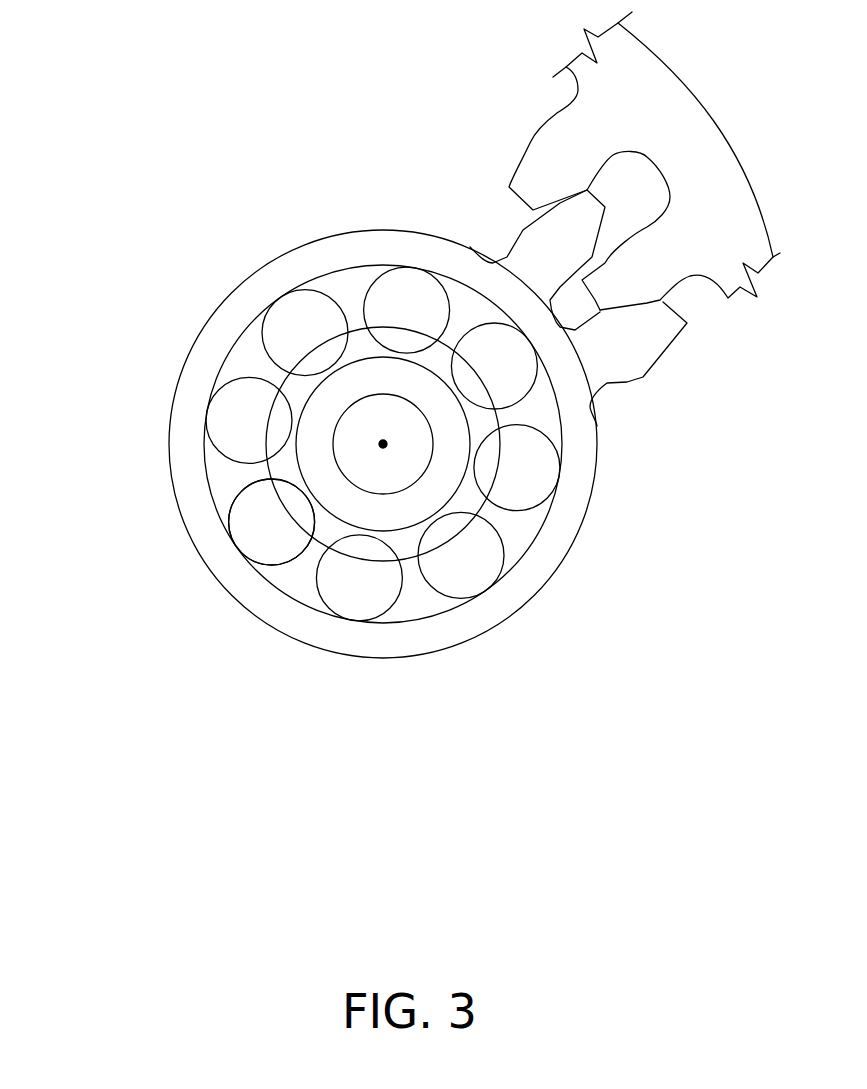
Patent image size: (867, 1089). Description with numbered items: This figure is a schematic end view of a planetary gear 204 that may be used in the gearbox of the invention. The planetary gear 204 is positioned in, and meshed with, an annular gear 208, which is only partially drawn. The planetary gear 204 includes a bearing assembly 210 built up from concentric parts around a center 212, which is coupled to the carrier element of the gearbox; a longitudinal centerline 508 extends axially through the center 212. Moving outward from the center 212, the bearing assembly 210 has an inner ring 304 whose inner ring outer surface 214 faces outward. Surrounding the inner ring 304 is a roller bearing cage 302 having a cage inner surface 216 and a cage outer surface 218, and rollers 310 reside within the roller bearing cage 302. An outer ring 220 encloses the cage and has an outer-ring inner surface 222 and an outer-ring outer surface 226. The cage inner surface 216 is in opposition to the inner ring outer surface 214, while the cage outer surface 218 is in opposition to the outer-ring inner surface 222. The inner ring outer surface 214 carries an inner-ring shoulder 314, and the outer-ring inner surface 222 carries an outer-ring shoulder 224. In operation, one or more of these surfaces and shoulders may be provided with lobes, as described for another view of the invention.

The planetary gear 204 is at (345, 232).
The annular gear 208 is at (538, 97).
The bearing assembly 210 is at (520, 537).
The center 212 is at (383, 450).
The inner ring outer surface 214 is at (318, 541).
The cage inner surface 216 is at (399, 545).
The cage outer surface 218 is at (372, 593).
The outer ring 220 is at (223, 330).
The outer-ring inner surface 222 is at (228, 494).
The outer-ring shoulder 224 is at (249, 368).
The outer-ring outer surface 226 is at (170, 444).
The roller bearing cage 302 is at (250, 418).
The inner ring 304 is at (223, 427).
The rollers 310 is at (317, 468).
The inner-ring shoulder 314 is at (288, 330).
The longitudinal centerline 508 is at (401, 439).